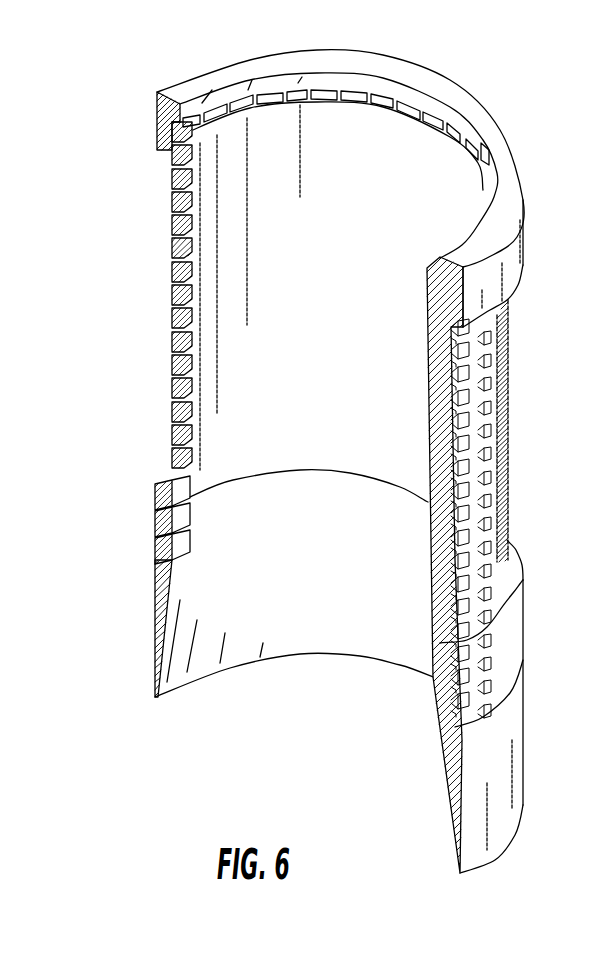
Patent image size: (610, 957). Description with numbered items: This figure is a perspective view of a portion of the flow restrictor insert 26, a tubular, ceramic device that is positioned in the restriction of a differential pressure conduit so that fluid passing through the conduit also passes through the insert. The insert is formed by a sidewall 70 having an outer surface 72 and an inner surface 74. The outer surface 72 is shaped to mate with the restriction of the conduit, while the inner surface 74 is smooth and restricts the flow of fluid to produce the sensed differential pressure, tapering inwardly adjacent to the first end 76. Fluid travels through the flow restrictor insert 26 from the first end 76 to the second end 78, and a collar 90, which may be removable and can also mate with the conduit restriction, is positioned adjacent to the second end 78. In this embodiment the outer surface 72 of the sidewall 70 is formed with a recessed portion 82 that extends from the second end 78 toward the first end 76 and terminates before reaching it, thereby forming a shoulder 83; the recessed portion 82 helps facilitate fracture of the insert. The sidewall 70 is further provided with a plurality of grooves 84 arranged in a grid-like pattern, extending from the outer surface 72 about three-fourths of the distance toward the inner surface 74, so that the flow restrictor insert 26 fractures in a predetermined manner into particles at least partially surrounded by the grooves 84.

The flow restrictor insert 26 is at (452, 846).
The sidewall 70 is at (428, 528).
The outer surface 72 is at (503, 798).
The inner surface 74 is at (211, 440).
The first end 76 is at (205, 673).
The second end 78 is at (433, 117).
The recessed portion 82 is at (510, 410).
The shoulder 83 is at (523, 552).
The grooves 84 is at (427, 411).
The collar 90 is at (503, 157).